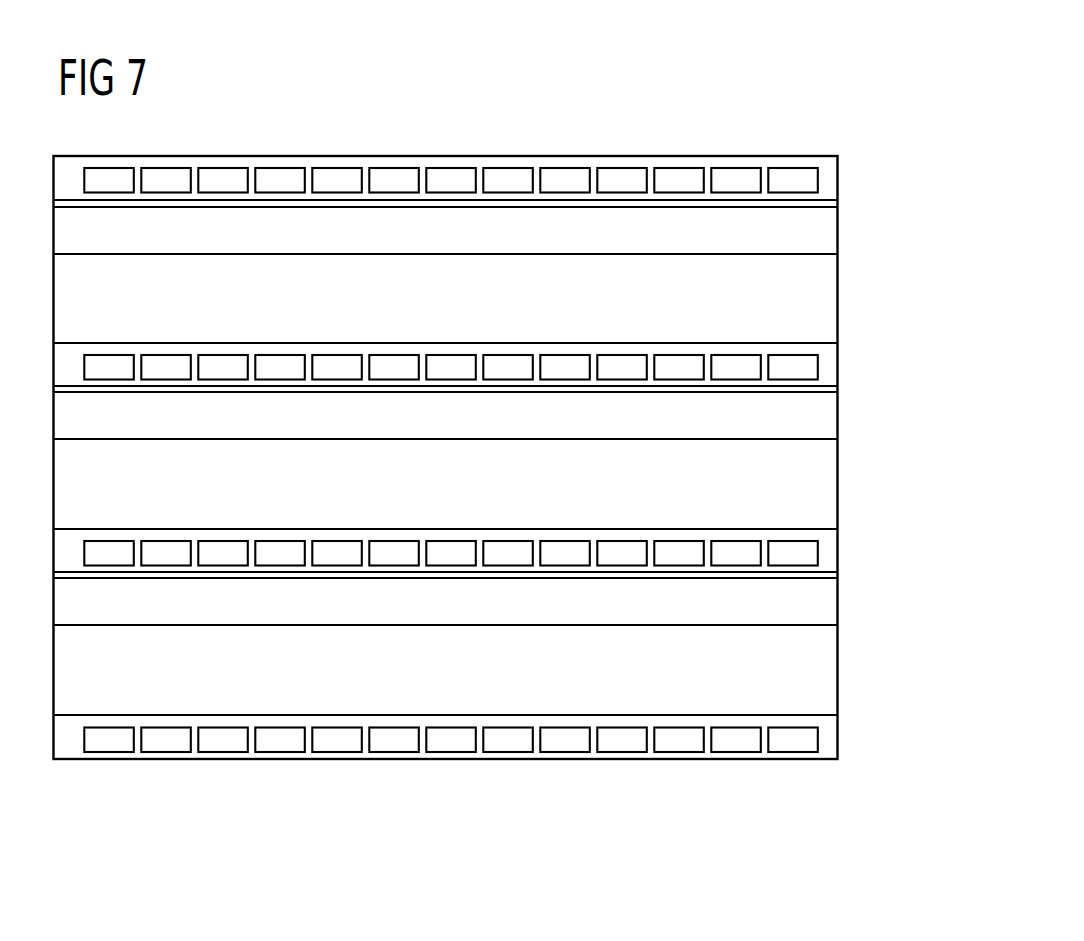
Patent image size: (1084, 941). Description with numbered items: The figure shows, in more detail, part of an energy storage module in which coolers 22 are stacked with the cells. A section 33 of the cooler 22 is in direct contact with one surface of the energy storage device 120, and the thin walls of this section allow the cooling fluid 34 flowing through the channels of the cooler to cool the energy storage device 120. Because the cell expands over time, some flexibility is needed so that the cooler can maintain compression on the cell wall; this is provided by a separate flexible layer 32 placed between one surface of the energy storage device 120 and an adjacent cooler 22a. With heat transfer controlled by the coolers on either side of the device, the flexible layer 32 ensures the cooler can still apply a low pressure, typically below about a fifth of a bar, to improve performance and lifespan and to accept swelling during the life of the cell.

The cooler 22 is at (432, 782).
The adjacent cooler 22a is at (861, 548).
The flexible layer 32 is at (828, 231).
The section of the cooler 33 is at (826, 750).
The cooling fluid 34 is at (737, 744).
The energy storage device 120 is at (861, 298).